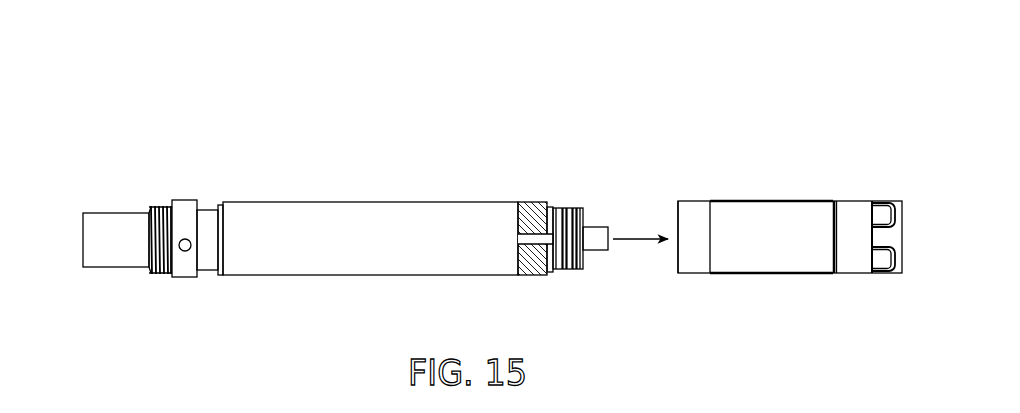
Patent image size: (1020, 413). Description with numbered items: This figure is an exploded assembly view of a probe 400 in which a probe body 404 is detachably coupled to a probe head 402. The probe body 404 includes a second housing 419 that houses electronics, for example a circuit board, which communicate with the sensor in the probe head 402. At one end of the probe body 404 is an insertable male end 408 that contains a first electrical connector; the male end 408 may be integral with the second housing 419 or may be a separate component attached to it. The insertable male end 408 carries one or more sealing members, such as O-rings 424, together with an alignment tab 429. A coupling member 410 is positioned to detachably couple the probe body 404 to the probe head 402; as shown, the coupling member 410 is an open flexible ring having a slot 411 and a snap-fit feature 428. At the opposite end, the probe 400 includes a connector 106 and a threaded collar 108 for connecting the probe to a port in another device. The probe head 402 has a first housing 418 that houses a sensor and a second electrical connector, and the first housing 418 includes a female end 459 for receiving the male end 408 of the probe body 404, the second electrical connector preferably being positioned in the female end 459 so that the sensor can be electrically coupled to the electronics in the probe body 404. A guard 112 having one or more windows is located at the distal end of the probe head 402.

The probe 400 is at (587, 98).
The probe head 402 is at (773, 180).
The probe body 404 is at (385, 180).
The connector 106 is at (118, 262).
The threaded collar 108 is at (183, 209).
The second housing 419 is at (350, 268).
The coupling member 410 is at (530, 274).
The slot 411 is at (519, 238).
The insertable male end 408 is at (583, 207).
The snap-fit feature 428 is at (553, 207).
The O-rings 424 is at (573, 272).
The alignment tab 429 is at (602, 228).
The female end 459 is at (679, 266).
The first housing 418 is at (768, 268).
The guard 112 is at (852, 268).